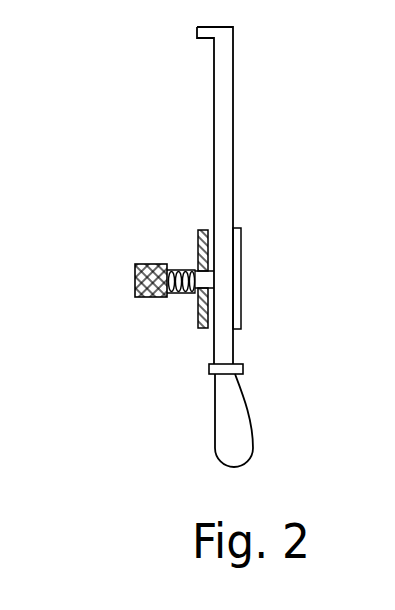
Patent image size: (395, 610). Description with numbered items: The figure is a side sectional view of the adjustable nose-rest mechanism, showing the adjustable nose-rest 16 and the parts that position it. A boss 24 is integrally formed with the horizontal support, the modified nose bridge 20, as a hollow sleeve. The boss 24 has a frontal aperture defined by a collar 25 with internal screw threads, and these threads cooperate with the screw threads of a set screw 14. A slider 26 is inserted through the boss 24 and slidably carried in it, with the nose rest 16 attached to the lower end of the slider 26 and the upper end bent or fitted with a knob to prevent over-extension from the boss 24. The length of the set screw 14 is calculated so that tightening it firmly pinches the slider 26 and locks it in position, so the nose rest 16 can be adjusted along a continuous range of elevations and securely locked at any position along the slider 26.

The set screw 14 is at (135, 275).
The nose rest 16 is at (248, 440).
The nose bridge 20 is at (239, 265).
The boss 24 is at (202, 228).
The collar 25 is at (192, 298).
The slider 26 is at (227, 96).